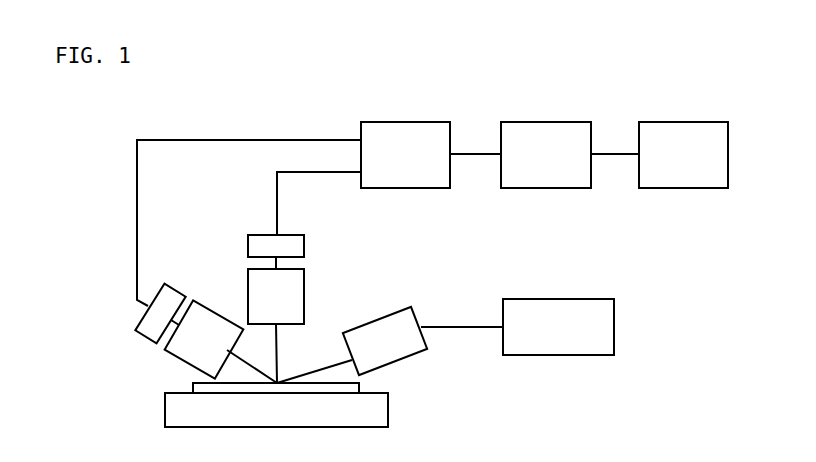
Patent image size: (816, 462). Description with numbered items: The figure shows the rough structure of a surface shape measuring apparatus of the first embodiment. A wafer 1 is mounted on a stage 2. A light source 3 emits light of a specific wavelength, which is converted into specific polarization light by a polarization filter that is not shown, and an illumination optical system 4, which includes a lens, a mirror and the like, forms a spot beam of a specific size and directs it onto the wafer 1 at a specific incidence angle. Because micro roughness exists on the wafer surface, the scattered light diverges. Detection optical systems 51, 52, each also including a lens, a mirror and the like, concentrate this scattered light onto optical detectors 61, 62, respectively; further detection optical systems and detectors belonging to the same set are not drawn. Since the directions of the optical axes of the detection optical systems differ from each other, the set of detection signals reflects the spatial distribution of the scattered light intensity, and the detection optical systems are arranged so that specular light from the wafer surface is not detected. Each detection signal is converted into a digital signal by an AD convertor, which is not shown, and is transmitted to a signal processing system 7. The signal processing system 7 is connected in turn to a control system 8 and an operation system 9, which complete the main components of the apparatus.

The wafer 1 is at (359, 386).
The stage 2 is at (388, 408).
The light source 3 is at (569, 355).
The illumination optical system 4 is at (407, 308).
The signal processing system 7 is at (407, 188).
The control system 8 is at (548, 188).
The operation system 9 is at (685, 188).
The detection optical system 51 is at (304, 281).
The detection optical system 52 is at (177, 358).
The optical detector 61 is at (304, 242).
The optical detector 62 is at (142, 335).